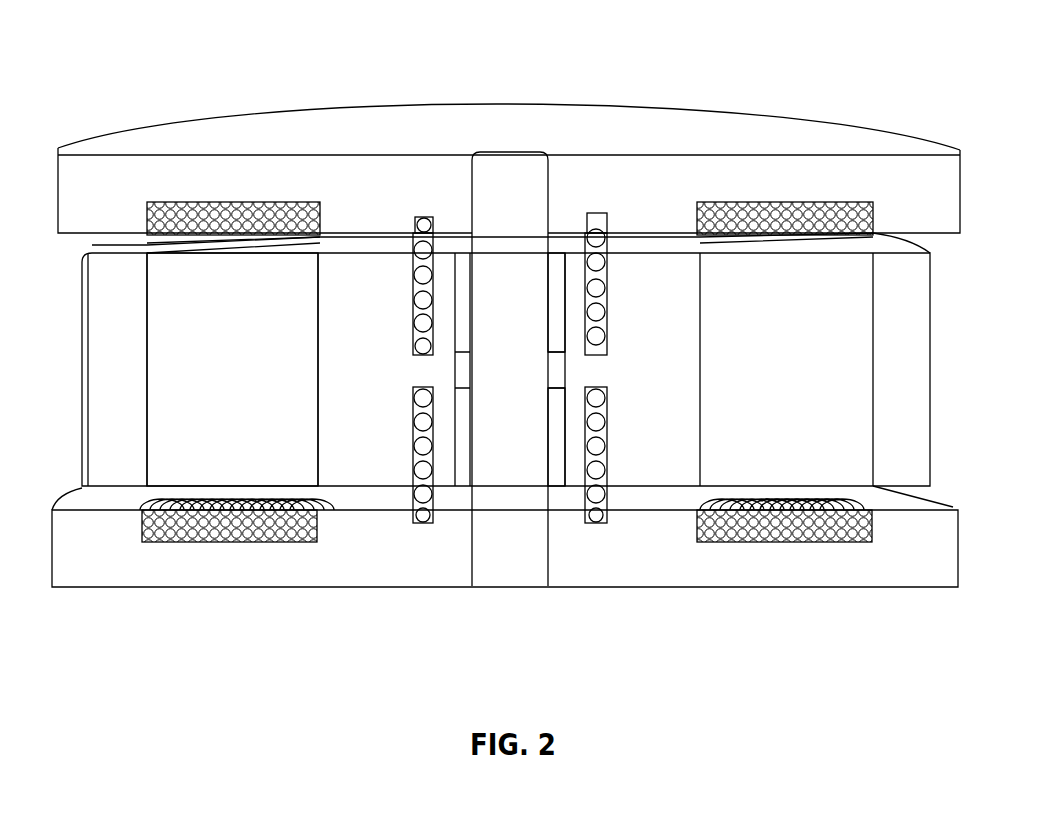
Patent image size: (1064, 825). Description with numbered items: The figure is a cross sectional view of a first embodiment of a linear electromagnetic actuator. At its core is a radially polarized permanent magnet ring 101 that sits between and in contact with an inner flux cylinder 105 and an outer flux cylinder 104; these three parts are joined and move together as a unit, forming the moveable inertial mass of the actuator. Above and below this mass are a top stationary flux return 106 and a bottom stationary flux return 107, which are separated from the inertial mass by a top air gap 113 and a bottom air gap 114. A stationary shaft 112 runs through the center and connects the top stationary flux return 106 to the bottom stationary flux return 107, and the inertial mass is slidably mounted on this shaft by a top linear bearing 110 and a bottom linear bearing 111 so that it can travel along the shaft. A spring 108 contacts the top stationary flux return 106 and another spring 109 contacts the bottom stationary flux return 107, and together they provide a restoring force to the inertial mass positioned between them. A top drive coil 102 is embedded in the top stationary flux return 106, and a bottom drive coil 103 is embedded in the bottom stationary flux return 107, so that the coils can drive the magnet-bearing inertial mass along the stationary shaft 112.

The radially polarized permanent magnet ring 101 is at (255, 450).
The top drive coil 102 is at (268, 205).
The bottom drive coil 103 is at (227, 523).
The outer flux cylinder 104 is at (100, 242).
The inner flux cylinder 105 is at (620, 250).
The top stationary flux return 106 is at (233, 135).
The bottom stationary flux return 107 is at (105, 570).
The spring 108 is at (422, 222).
The spring 109 is at (593, 463).
The top linear bearing 110 is at (553, 258).
The bottom linear bearing 111 is at (553, 483).
The stationary shaft 112 is at (505, 545).
The top air gap 113 is at (886, 224).
The bottom air gap 114 is at (884, 504).